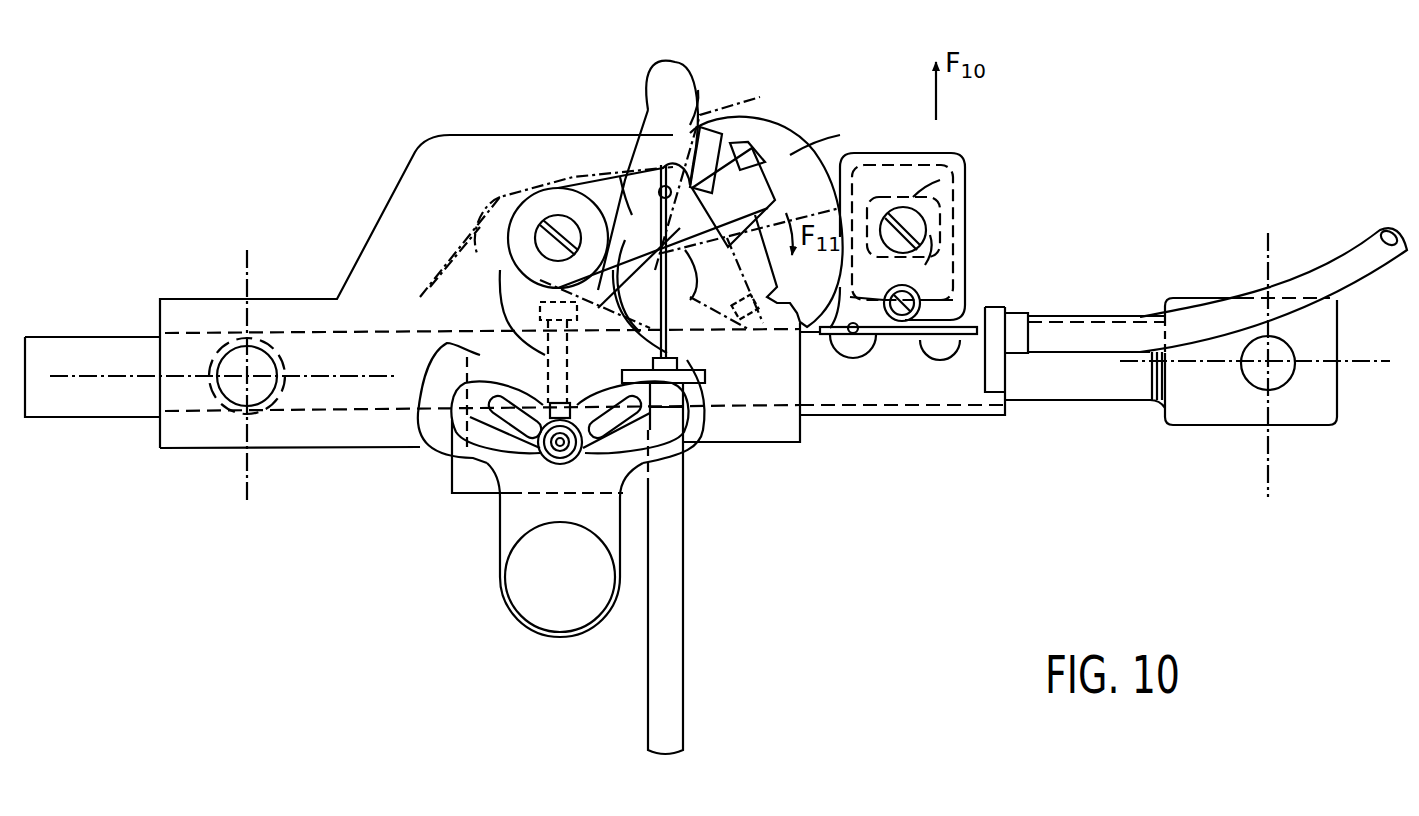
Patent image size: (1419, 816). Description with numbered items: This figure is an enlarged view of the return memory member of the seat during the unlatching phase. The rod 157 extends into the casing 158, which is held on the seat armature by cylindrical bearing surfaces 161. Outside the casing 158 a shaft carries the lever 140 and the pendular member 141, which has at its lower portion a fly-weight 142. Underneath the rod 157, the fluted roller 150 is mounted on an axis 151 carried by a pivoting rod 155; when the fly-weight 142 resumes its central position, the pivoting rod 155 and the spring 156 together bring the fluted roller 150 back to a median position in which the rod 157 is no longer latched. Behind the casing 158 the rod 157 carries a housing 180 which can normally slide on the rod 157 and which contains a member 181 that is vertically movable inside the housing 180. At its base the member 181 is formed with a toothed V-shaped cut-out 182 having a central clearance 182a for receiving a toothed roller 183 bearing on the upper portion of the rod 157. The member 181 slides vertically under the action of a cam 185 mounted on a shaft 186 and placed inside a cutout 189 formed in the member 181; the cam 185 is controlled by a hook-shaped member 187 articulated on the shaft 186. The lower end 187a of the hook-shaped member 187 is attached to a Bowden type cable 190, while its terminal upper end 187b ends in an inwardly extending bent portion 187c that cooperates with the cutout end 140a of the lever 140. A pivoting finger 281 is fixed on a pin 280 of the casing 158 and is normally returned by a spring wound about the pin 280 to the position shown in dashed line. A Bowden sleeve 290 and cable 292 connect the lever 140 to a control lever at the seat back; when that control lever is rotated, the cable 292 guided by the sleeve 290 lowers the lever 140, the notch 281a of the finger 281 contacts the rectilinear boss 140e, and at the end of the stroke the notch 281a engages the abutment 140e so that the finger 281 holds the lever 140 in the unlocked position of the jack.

The lever 140 is at (750, 140).
The cutout end 140a is at (693, 133).
The rectilinear boss 140e is at (600, 193).
The pendular member 141 is at (608, 505).
The fly-weight 142 is at (525, 592).
The fluted roller 150 is at (503, 510).
The axis 151 is at (537, 455).
The pivoting rod 155 is at (540, 307).
The spring 156 is at (500, 333).
The rod 157 is at (88, 395).
The casing 158 is at (398, 176).
The cylindrical bearing surfaces 161 is at (240, 345).
The housing 180 is at (905, 418).
The member 181 is at (947, 185).
The V-shaped cut-out 182 is at (935, 292).
The central clearance 182a is at (920, 295).
The toothed roller 183 is at (990, 296).
The cam 185 is at (913, 197).
The shaft 186 is at (898, 210).
The hook-shaped member 187 is at (787, 190).
The lower end 187a is at (847, 345).
The terminal upper end 187b is at (708, 127).
The bent portion 187c is at (752, 143).
The cutout 189 is at (930, 250).
The cable 190 is at (1345, 280).
The pin 280 is at (653, 172).
The pivoting finger 281 is at (673, 80).
The notch 281a is at (815, 165).
The Bowden sleeve 290 is at (705, 355).
The cable 292 is at (632, 190).